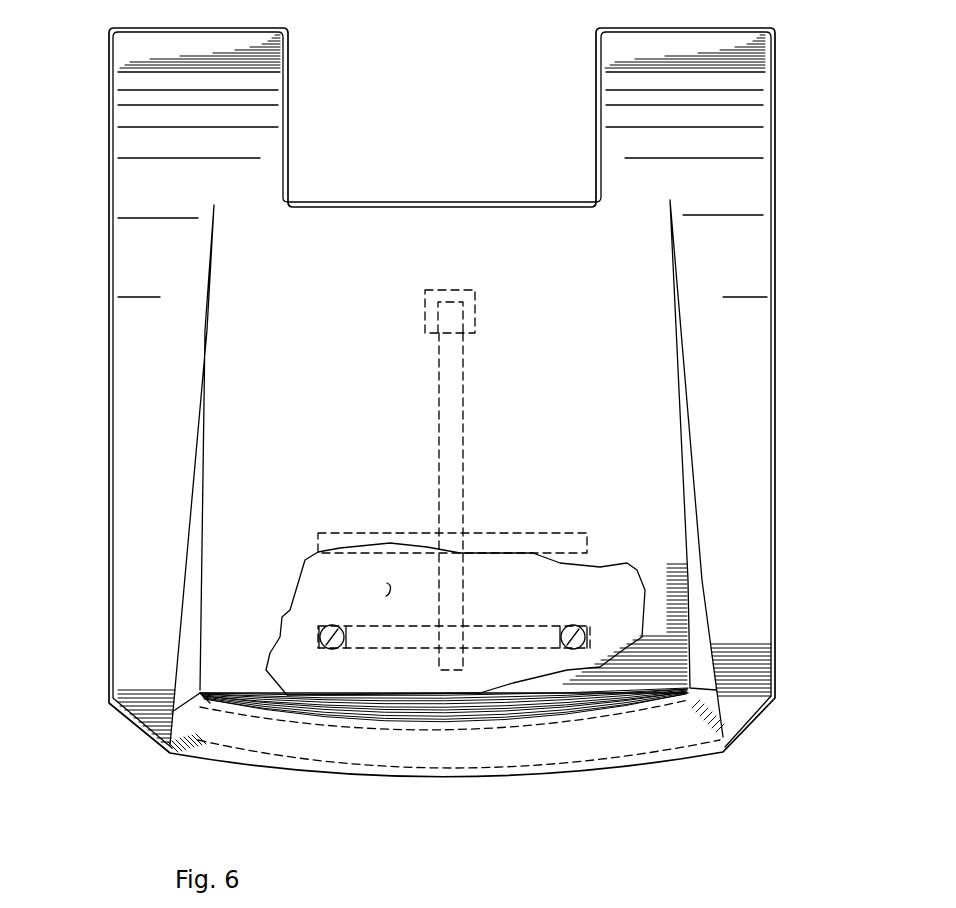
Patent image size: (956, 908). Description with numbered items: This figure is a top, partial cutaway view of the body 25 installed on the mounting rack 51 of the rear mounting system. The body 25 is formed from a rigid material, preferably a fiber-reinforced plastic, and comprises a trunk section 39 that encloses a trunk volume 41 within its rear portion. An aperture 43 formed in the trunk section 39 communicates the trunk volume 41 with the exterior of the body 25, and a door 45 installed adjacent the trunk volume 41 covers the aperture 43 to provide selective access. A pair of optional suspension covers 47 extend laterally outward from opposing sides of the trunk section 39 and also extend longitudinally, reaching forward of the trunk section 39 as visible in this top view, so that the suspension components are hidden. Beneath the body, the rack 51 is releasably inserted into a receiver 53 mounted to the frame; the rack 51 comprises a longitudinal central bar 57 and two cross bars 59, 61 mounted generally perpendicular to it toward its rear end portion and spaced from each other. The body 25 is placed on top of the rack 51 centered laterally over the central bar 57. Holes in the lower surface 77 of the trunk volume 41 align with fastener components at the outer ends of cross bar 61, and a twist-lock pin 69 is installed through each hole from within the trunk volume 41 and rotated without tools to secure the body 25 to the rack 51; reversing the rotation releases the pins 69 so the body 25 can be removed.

The body 25 is at (100, 644).
The trunk section 39 is at (718, 672).
The trunk volume 41 is at (387, 583).
The aperture 43 is at (200, 733).
The door 45 is at (367, 753).
The suspension covers 47 is at (137, 373).
The mounting rack 51 is at (429, 393).
The receiver 53 is at (477, 312).
The central bar 57 is at (463, 385).
The cross bar 59 is at (533, 530).
The cross bar 61 is at (520, 623).
The twist-lock pin 69 is at (318, 640).
The lower surface 77 is at (333, 590).